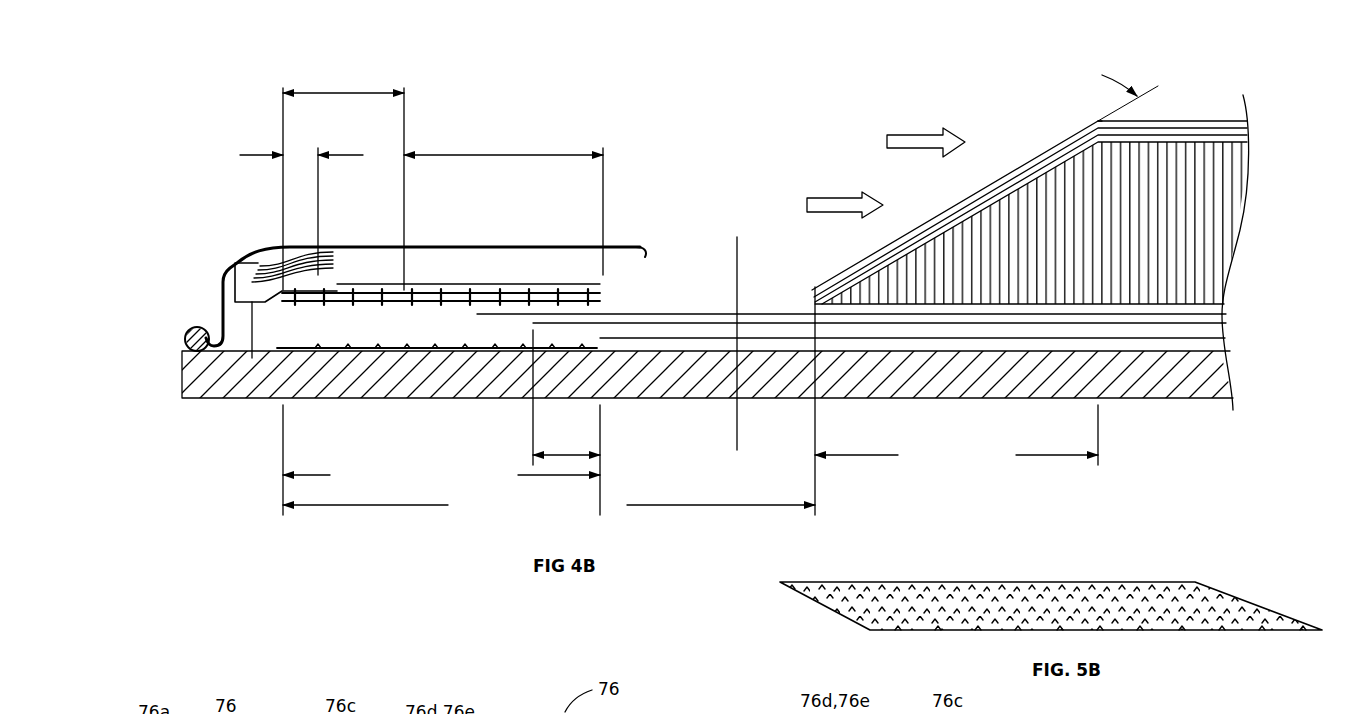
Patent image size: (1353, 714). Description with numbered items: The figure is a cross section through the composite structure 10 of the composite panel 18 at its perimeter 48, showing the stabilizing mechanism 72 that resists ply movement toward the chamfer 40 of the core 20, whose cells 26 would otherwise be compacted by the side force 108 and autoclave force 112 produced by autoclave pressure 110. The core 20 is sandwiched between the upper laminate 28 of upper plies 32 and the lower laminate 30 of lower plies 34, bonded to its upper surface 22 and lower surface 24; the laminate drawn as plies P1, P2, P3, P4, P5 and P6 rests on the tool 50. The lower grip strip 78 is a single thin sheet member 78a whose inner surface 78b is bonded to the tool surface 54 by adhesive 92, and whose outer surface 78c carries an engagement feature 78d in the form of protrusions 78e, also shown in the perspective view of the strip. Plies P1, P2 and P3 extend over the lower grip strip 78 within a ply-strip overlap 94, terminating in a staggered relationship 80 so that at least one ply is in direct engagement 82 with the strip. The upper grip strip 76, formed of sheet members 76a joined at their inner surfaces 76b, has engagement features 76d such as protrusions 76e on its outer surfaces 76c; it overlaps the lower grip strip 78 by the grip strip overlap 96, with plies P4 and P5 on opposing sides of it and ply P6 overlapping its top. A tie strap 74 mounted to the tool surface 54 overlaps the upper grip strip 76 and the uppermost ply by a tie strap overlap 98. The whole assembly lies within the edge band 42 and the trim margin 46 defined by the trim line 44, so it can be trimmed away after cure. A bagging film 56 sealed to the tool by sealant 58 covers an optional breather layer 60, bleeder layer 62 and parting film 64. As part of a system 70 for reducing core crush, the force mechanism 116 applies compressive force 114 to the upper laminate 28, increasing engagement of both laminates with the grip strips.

In FIG. 4B, the composite structure 10 is at (1019, 76).
In FIG. 4B, the composite panel 18 is at (975, 72).
In FIG. 4B, the core 20 is at (1075, 223).
In FIG. 4B, the cells 26 is at (1262, 147).
In FIG. 4B, the upper surface 22 is at (1250, 141).
In FIG. 4B, the lower surface 24 is at (1222, 302).
In FIG. 4B, the upper laminate 28 is at (1069, 200).
In FIG. 4B, the upper plies 32 is at (1253, 120).
In FIG. 4B, the lower laminate 30 is at (1271, 313).
In FIG. 4B, the lower plies 34 is at (1257, 297).
In FIG. 4B, the chamfer 40 is at (1020, 453).
In FIG. 4B, the edge band 42 is at (620, 515).
In FIG. 4B, the trim line 44 is at (736, 254).
In FIG. 4B, the trim margin 46 is at (512, 485).
In FIG. 4B, the perimeter 48 is at (222, 152).
In FIG. 4B, the tool 50 is at (200, 398).
In FIG. 4B, the tool surface 54 is at (878, 352).
In FIG. 4B, the bagging film 56 is at (641, 243).
In FIG. 4B, the sealant 58 is at (188, 331).
In FIG. 4B, the breather layer 60 is at (273, 260).
In FIG. 4B, the bleeder layer 62 is at (255, 277).
In FIG. 4B, the parting film 64 is at (268, 268).
In FIG. 4B, the system 70 is at (459, 365).
In FIG. 4B, the stabilizing mechanism 72 is at (372, 345).
In FIG. 4B, the tie strap 74 is at (227, 292).
In FIG. 4B, the upper grip strip 76 is at (473, 262).
In FIG. 4B, the sheet members 76a is at (473, 262).
In FIG. 4B, the inner surfaces 76b is at (473, 262).
In FIG. 4B, the outer surfaces 76c is at (473, 262).
In FIG. 4B, the engagement feature 76d is at (473, 262).
In FIG. 4B, the protrusion 76e is at (393, 292).
In FIG. 4B, the lower grip strip 78 is at (437, 380).
In FIG. 5B, the lower grip strip 78 is at (1051, 577).
In FIG. 4B, the sheet member 78a is at (437, 380).
In FIG. 5B, the sheet member 78a is at (1051, 577).
In FIG. 4B, the inner surface 78b is at (437, 380).
In FIG. 5B, the inner surface 78b is at (1051, 577).
In FIG. 4B, the outer surface 78c is at (437, 380).
In FIG. 5B, the outer surface 78c is at (1051, 577).
In FIG. 4B, the engagement feature 78d is at (437, 380).
In FIG. 5B, the engagement feature 78d is at (1051, 577).
In FIG. 4B, the protrusion 78e is at (345, 347).
In FIG. 5B, the protrusion 78e is at (1000, 592).
In FIG. 4B, the staggered relationship 80 is at (646, 384).
In FIG. 4B, the direct engagement 82 is at (580, 324).
In FIG. 4B, the adhesive 92 is at (252, 358).
In FIG. 4B, the ply-strip overlap 94 is at (492, 148).
In FIG. 4B, the grip strip overlap 96 is at (344, 89).
In FIG. 4B, the tie strap overlap 98 is at (303, 156).
In FIG. 4B, the side force 108 is at (848, 196).
In FIG. 4B, the autoclave pressure 110 is at (998, 156).
In FIG. 4B, the autoclave force 112 is at (585, 176).
In FIG. 4B, the compressive force 114 is at (585, 176).
In FIG. 4B, the force mechanism 116 is at (799, 176).
In FIG. 4B, the ply P1 is at (1215, 340).
In FIG. 4B, the ply P2 is at (1217, 324).
In FIG. 4B, the ply P3 is at (1212, 314).
In FIG. 4B, the ply P4 is at (1203, 142).
In FIG. 4B, the ply P5 is at (1194, 128).
In FIG. 4B, the ply P6 is at (1169, 121).